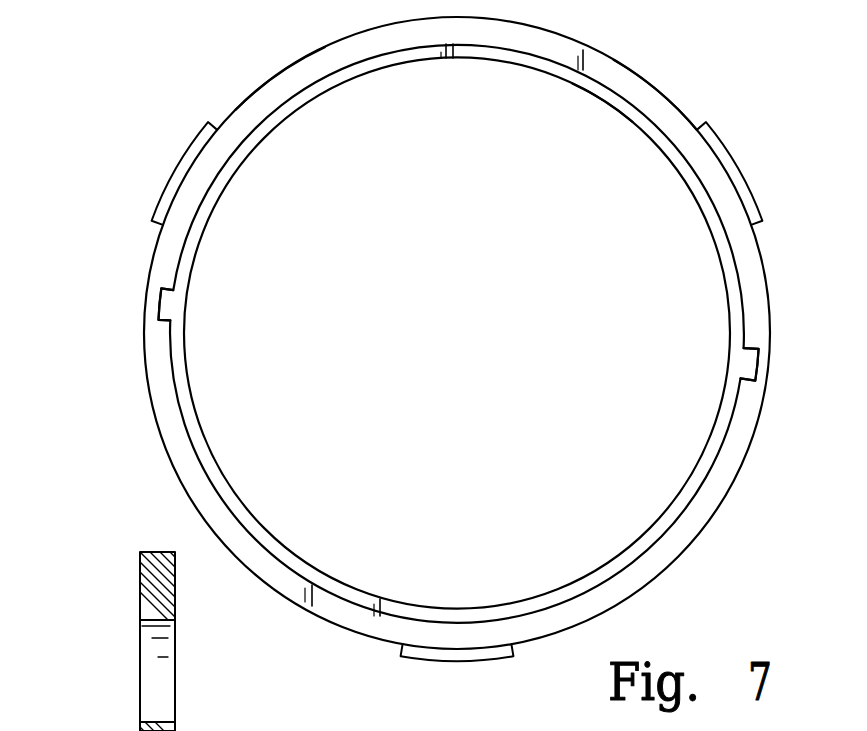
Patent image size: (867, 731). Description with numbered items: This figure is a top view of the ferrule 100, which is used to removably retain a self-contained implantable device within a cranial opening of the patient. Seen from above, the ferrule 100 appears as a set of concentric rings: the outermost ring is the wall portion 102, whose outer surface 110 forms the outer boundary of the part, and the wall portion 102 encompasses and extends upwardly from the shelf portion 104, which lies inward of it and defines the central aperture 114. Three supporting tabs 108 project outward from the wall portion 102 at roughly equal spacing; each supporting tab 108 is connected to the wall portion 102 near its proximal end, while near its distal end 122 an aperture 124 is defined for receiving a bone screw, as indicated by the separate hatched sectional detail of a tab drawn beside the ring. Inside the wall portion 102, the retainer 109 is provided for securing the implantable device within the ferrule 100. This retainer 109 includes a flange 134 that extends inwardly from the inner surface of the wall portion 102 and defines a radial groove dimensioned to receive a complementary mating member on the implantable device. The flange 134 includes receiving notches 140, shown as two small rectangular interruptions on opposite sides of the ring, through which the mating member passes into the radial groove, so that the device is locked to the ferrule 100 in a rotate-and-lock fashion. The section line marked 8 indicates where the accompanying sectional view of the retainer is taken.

The ferrule 100 is at (413, 354).
The wall portion 102 is at (745, 463).
The shelf portion 104 is at (652, 536).
The supporting tab 108 is at (162, 190).
The retainer 109 is at (253, 80).
The outer surface 110 is at (648, 83).
The aperture 114 is at (608, 102).
The distal end 122 is at (140, 552).
The aperture 124 is at (140, 675).
The flange 134 is at (175, 397).
The receiving notches 140 is at (159, 320).
The section line 8- 8 is at (132, 142).